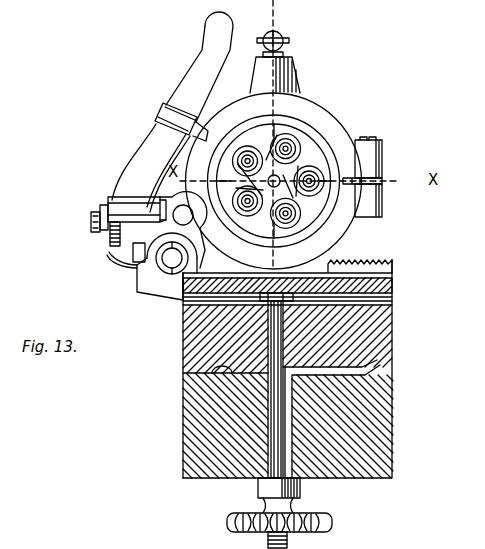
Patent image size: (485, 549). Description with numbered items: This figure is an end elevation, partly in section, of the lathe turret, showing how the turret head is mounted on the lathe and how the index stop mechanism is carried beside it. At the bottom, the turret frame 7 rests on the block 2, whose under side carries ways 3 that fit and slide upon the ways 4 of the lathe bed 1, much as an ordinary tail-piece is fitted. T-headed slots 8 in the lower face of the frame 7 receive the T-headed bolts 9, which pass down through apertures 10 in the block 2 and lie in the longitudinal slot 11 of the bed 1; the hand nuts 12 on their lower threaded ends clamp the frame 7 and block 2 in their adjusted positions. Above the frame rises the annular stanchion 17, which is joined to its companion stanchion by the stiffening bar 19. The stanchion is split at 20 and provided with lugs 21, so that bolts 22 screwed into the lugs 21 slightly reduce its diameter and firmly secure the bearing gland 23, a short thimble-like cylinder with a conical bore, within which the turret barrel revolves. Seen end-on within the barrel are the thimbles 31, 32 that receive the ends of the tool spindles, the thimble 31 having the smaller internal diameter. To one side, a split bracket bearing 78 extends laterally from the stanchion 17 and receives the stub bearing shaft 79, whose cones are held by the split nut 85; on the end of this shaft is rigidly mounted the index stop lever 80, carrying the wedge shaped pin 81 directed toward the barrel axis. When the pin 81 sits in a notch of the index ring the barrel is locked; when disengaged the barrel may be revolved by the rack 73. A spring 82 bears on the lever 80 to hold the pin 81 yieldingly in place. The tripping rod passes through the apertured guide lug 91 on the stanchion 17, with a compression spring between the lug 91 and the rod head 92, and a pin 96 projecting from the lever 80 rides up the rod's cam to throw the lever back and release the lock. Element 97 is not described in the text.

The lathe bed 1 is at (394, 422).
The block 2 is at (393, 345).
The ways 3 is at (183, 369).
The ways of the lathe bed 4 is at (190, 389).
The turret frame 7 is at (393, 286).
The T-headed slots 8 is at (395, 298).
The T-headed bolts 9 is at (268, 457).
The apertures 10 is at (186, 328).
The longitudinal slot 11 is at (190, 425).
The hand nuts 12 is at (333, 523).
The annular stanchion 17 is at (325, 117).
The stiffening bar 19 is at (293, 78).
The split 20 is at (380, 182).
The lugs 21 is at (383, 158).
The bolts 22 is at (367, 142).
The bearing gland 23 is at (347, 222).
The thimble 31 is at (280, 142).
The thimble 32 is at (257, 178).
The rack 73 is at (393, 268).
The split bracket bearing 78 is at (140, 289).
The stub bearing shaft 79 is at (137, 272).
The index stop lever 80 is at (138, 167).
The wedge shaped pin 81 is at (204, 128).
The spring 82 is at (120, 259).
The split nut 85 is at (172, 259).
The apertured guide lug 91 is at (182, 202).
The head 92 is at (190, 226).
The pin 96 is at (108, 210).
The screw 97 is at (95, 230).